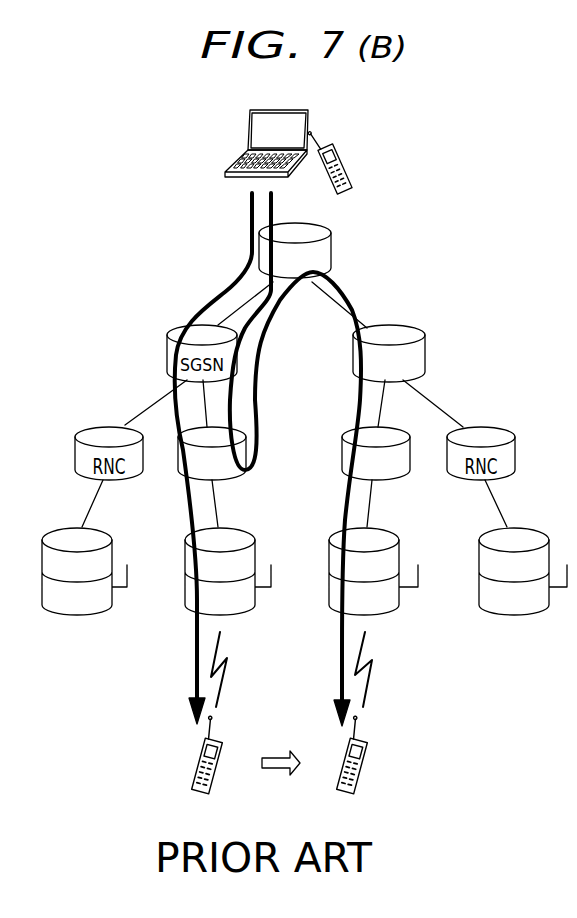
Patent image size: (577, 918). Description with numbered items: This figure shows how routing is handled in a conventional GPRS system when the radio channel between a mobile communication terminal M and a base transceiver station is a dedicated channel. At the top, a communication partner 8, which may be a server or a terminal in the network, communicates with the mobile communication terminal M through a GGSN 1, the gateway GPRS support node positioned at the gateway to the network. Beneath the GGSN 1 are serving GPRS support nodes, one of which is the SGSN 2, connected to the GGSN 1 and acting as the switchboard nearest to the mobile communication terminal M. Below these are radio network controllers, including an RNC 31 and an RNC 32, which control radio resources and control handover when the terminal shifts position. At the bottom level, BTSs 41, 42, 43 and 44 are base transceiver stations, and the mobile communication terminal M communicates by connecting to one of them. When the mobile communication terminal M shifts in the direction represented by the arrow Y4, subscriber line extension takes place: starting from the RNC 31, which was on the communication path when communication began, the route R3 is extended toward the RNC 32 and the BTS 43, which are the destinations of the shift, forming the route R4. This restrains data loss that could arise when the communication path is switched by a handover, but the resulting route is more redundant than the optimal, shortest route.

The GGSN 1 is at (332, 250).
The SGSN 2 is at (427, 352).
The communication partner 8 is at (323, 121).
The RNC 31 is at (233, 477).
The RNC 32 is at (388, 438).
The BTS 41 is at (92, 540).
The BTS 42 is at (235, 538).
The BTS 43 is at (380, 543).
The BTS 44 is at (530, 540).
The route R3 is at (227, 287).
The route R4 is at (339, 289).
The mobile communication terminal M is at (196, 755).
The arrow Y4 is at (277, 757).